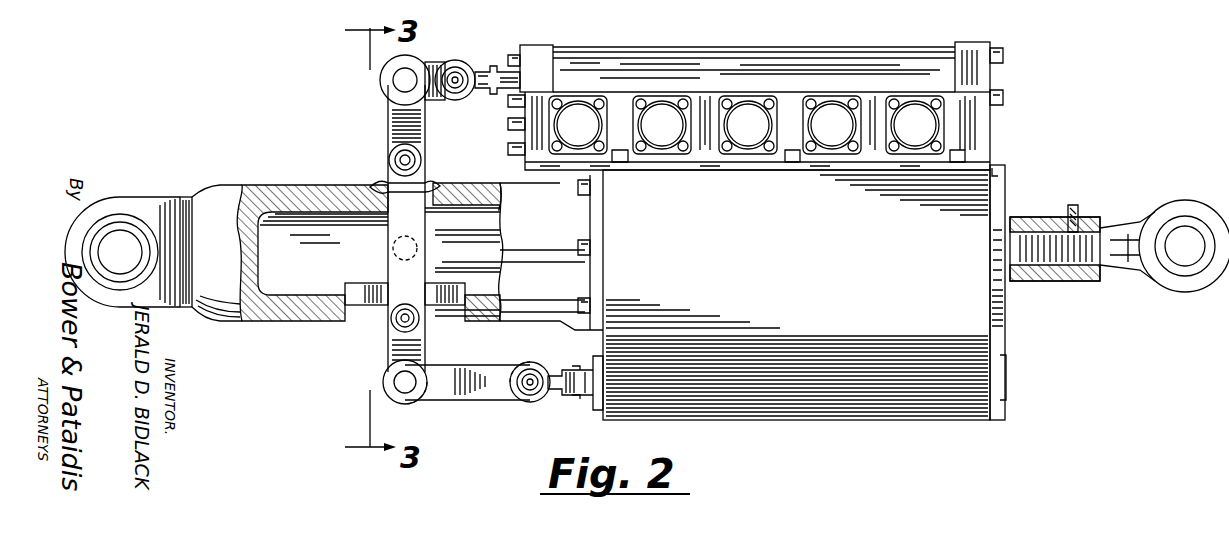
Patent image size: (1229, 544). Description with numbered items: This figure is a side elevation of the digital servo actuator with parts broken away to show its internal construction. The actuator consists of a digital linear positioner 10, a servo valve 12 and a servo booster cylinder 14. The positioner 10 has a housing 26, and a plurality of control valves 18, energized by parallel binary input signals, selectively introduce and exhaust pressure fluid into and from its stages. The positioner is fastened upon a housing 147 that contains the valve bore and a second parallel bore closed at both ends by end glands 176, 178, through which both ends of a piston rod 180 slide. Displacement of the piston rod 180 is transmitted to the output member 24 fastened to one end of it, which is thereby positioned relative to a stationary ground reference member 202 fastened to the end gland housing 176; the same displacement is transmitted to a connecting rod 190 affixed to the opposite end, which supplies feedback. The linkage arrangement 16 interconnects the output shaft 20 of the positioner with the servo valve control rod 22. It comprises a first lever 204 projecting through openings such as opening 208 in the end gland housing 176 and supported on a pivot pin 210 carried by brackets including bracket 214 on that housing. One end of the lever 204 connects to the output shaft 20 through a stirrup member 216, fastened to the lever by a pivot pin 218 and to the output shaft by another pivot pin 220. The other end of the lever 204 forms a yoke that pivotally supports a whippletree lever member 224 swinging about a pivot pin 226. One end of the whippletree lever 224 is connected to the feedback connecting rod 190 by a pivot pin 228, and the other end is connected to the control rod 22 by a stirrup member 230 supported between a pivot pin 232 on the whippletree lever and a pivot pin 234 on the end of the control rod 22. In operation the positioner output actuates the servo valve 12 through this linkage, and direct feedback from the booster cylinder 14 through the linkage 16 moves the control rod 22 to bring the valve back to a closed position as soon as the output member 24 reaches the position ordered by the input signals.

The digital linear positioner 10 is at (755, 108).
The servo valve 12 is at (925, 418).
The servo booster cylinder 14 is at (1007, 190).
The linkage arrangement 16 is at (392, 120).
The control valves 18 is at (662, 112).
The output shaft 20 is at (488, 72).
The servo valve control rod 22 is at (572, 378).
The output member 24 is at (1185, 210).
The housing 26 is at (818, 50).
The housing 147 is at (1008, 336).
The end gland 176 is at (512, 192).
The end gland 178 is at (995, 168).
The piston rod 180 is at (1055, 282).
The connecting rod 190 is at (488, 245).
The ground reference member 202 is at (117, 225).
The first lever 204 is at (395, 228).
The opening 208 is at (365, 290).
The pivot pin 210 is at (395, 158).
The bracket 214 is at (410, 188).
The stirrup member 216 is at (440, 62).
The pivot pin 218 is at (400, 96).
The pivot pin 220 is at (455, 75).
The whippletree lever member 224 is at (415, 345).
The pivot pin 226 is at (395, 322).
The pivot pin 228 is at (397, 250).
The stirrup member 230 is at (480, 392).
The pivot pin 232 is at (400, 380).
The pivot pin 234 is at (528, 395).